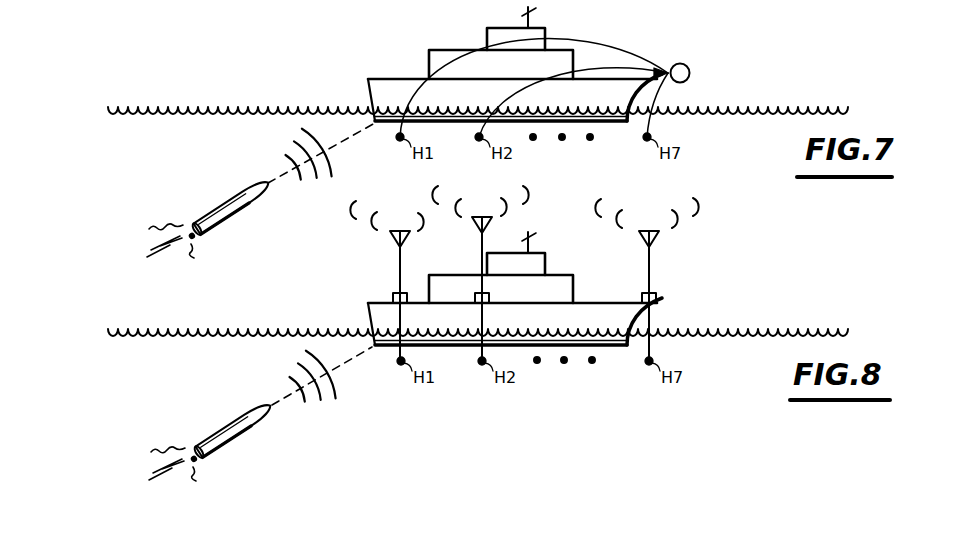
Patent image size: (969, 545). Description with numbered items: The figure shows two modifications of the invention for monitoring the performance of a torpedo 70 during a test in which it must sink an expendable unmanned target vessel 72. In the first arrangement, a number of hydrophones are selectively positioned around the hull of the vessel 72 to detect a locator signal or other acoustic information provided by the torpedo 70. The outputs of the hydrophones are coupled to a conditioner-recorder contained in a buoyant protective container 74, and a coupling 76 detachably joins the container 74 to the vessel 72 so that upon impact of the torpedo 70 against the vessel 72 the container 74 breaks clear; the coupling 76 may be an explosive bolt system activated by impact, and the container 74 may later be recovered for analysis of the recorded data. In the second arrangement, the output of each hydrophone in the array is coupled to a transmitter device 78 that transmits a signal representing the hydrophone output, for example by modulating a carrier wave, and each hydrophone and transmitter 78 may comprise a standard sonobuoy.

In FIG. 7, the torpedo 70 is at (243, 208).
In FIG. 8, the torpedo 70 is at (230, 423).
In FIG. 7, the expendable unmanned target vessel 72 is at (396, 88).
In FIG. 8, the expendable unmanned target vessel 72 is at (380, 307).
In FIG. 7, the buoyant protective container 74 is at (690, 71).
In FIG. 7, the coupling 76 is at (661, 71).
In FIG. 8, the transmitter device 78 is at (407, 292).